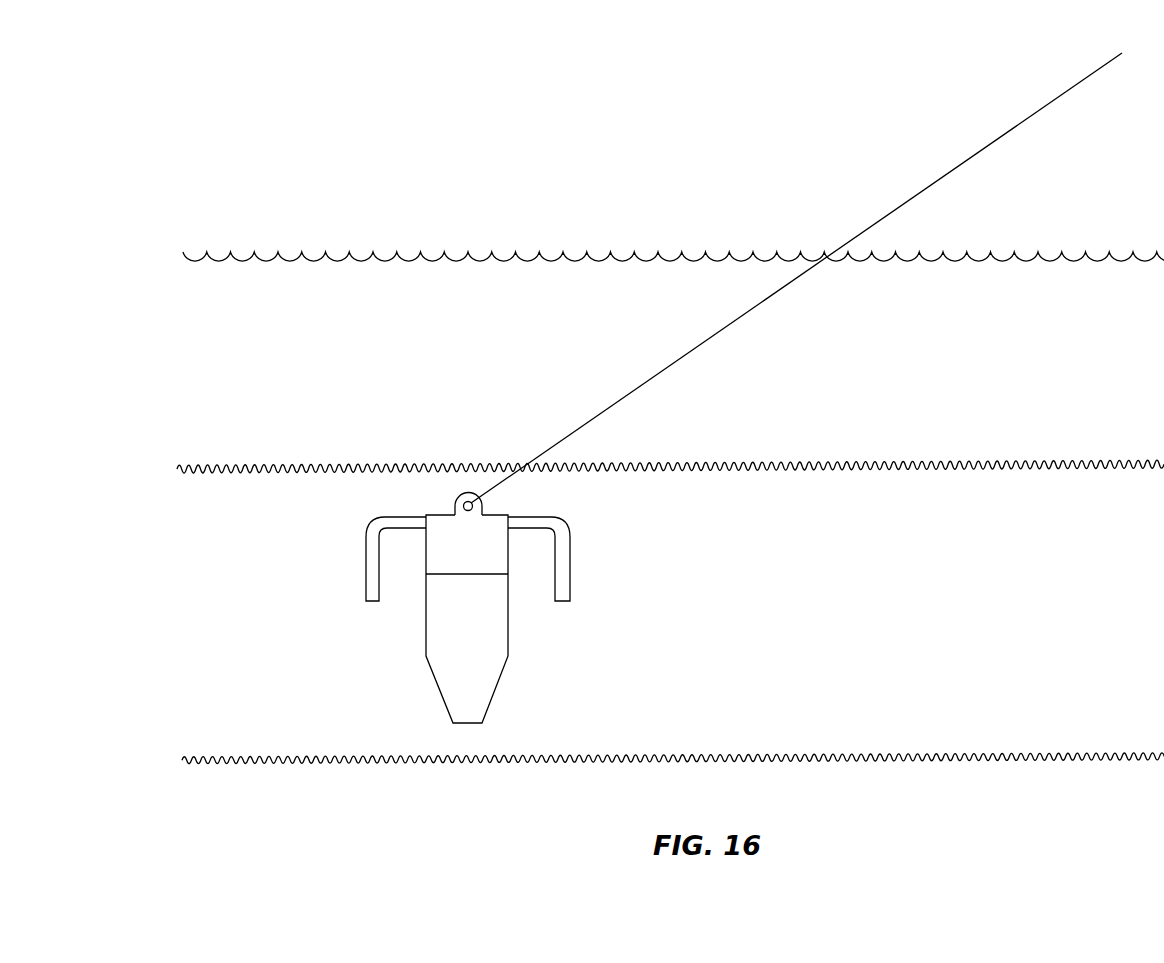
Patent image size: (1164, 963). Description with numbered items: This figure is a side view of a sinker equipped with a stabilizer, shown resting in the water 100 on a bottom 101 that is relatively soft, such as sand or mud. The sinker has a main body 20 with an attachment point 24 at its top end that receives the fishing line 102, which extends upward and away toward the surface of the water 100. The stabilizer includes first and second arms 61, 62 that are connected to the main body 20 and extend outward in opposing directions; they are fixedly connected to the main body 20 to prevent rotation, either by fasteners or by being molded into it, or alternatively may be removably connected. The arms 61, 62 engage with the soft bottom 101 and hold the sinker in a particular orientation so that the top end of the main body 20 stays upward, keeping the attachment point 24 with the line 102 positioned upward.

The main body 20 is at (492, 597).
The attachment point 24 is at (462, 498).
The first arm 61 is at (565, 566).
The second arm 62 is at (375, 578).
The water 100 is at (1067, 252).
The bottom 101 is at (1053, 465).
The fishing line 102 is at (968, 158).